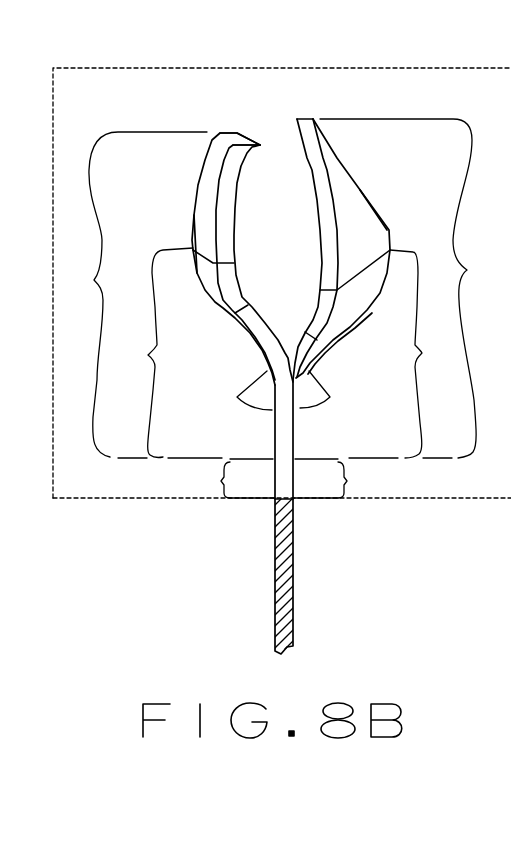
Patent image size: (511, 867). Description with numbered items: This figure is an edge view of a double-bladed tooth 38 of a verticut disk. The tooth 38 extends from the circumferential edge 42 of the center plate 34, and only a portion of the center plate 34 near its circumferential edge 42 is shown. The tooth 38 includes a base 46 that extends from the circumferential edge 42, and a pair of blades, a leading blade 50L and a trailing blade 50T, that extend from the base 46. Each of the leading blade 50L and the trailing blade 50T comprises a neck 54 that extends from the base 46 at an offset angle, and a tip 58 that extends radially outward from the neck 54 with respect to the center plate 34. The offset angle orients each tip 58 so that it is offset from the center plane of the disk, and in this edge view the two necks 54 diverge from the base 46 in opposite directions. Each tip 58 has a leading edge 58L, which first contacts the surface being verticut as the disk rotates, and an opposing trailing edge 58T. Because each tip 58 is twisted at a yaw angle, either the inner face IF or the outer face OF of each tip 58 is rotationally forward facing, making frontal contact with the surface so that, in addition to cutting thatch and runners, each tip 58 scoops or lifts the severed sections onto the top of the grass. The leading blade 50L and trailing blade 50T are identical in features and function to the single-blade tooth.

The tooth 38 is at (272, 68).
The tip 58 is at (207, 213).
The trailing edge 58T is at (247, 142).
The leading edge 58L is at (327, 245).
The outer face OF is at (207, 183).
The inner face IF is at (314, 234).
The leading blade 50L is at (132, 295).
The trailing blade 50T is at (414, 288).
The neck 54 is at (284, 353).
The base 46 is at (286, 478).
The circumferential edge 42 is at (285, 499).
The center plate 34 is at (293, 593).